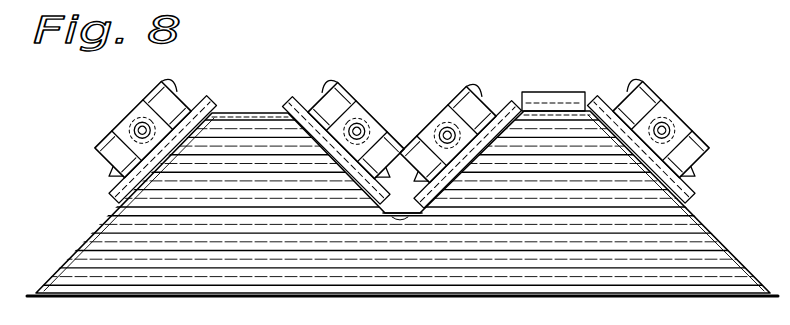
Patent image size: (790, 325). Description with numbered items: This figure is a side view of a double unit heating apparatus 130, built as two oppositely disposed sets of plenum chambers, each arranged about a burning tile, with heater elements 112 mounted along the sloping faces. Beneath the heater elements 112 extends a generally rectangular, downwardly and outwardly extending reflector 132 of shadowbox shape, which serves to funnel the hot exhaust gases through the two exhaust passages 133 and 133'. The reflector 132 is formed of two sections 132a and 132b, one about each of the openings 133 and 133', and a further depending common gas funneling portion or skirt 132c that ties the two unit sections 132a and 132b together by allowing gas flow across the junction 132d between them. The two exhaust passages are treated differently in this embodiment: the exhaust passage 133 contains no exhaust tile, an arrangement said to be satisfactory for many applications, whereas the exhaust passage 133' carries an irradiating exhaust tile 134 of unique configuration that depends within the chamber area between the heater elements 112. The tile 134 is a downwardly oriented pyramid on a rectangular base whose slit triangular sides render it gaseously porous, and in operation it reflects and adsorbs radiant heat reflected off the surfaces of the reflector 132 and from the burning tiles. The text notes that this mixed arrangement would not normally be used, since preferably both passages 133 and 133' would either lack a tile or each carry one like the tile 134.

The heater element 112 is at (181, 89).
The heating apparatus 130 is at (709, 215).
The reflector 132 is at (566, 290).
The reflector section 132a is at (270, 162).
The reflector section 132b is at (565, 188).
The common gas funneling portion or skirt 132c is at (395, 251).
The junction 132d is at (408, 213).
The exhaust passage 133 is at (205, 134).
The exhaust passage 133' is at (489, 126).
The irradiating exhaust tile 134 is at (583, 85).